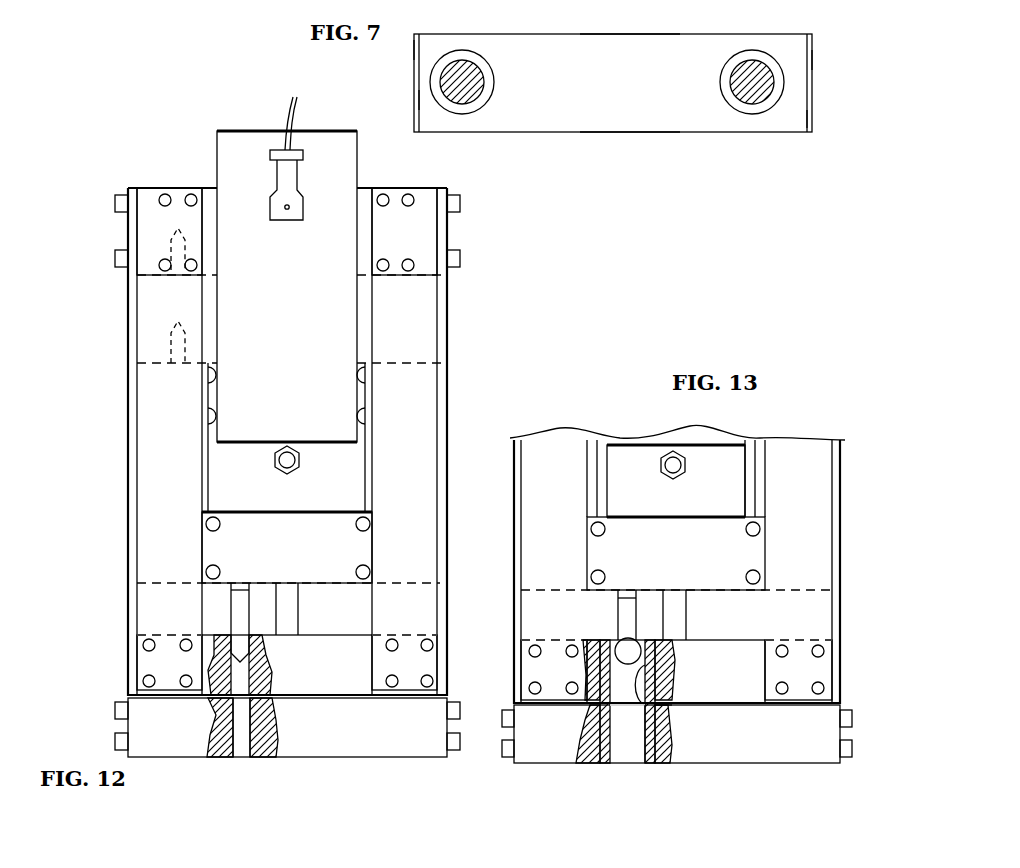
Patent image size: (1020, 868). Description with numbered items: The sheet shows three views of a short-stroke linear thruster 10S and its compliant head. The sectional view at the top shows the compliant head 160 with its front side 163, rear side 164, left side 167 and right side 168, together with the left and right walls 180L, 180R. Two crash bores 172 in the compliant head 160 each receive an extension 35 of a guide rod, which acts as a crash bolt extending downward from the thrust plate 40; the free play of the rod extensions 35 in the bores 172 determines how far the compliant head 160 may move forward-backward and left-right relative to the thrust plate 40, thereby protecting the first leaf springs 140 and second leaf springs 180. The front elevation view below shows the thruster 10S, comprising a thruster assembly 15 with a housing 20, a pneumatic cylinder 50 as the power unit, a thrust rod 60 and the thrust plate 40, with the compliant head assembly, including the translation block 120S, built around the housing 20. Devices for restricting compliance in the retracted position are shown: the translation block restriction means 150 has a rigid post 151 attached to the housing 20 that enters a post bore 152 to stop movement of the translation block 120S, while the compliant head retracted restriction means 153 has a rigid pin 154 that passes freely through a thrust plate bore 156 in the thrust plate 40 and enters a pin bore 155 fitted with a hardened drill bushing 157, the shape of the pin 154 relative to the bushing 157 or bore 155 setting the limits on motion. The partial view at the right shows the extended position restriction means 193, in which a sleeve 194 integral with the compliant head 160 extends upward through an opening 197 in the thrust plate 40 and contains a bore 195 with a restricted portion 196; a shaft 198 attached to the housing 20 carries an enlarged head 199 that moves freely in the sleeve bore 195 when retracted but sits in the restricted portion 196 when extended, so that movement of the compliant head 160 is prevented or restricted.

In FIG. 7, the compliant head 160 is at (786, 27).
In FIG. 12, the compliant head 160 is at (416, 740).
In FIG. 13, the compliant head 160 is at (790, 748).
In FIG. 7, the left side wall 180L is at (414, 46).
In FIG. 7, the right side wall 180R is at (812, 66).
In FIG. 7, the left side 167 is at (414, 101).
In FIG. 7, the right side 168 is at (812, 118).
In FIG. 7, the rear side 164 is at (632, 34).
In FIG. 7, the front side 163 is at (642, 132).
In FIG. 7, the crash bore 172 is at (494, 70).
In FIG. 7, the extension of guide rod 35 is at (474, 96).
In FIG. 12, the second leaf springs 180 is at (447, 412).
In FIG. 13, the second leaf springs 180 is at (677, 564).
In FIG. 12, the translation block 120S is at (447, 192).
In FIG. 12, the thruster 10S is at (500, 252).
In FIG. 13, the thruster 10S is at (618, 428).
In FIG. 12, the thruster assembly 15 is at (486, 310).
In FIG. 12, the pneumatic cylinder 50 is at (300, 334).
In FIG. 13, the pneumatic cylinder 50 is at (720, 460).
In FIG. 12, the housing 20 is at (312, 559).
In FIG. 13, the housing 20 is at (701, 566).
In FIG. 12, the thrust rod 60 is at (290, 606).
In FIG. 13, the thrust rod 60 is at (682, 612).
In FIG. 12, the thrust plate 40 is at (343, 664).
In FIG. 13, the thrust plate 40 is at (730, 697).
In FIG. 12, the first leaf springs 140 is at (158, 448).
In FIG. 13, the first leaf springs 140 is at (548, 530).
In FIG. 12, the translation block restriction means 150 is at (124, 322).
In FIG. 12, the rigid post 151 is at (171, 343).
In FIG. 12, the post bore 152 is at (171, 242).
In FIG. 12, the rigid pin 154 is at (240, 608).
In FIG. 12, the thrust plate bore 156 is at (240, 683).
In FIG. 12, the drill bushing 157 is at (220, 732).
In FIG. 12, the pin bore 155 is at (246, 735).
In FIG. 12, the compliant head retracted restriction means 153 is at (240, 763).
In FIG. 13, the extended position restriction means 193 is at (578, 764).
In FIG. 13, the sleeve 194 is at (652, 754).
In FIG. 13, the sleeve bore 195 is at (626, 744).
In FIG. 13, the restricted portion 196 is at (658, 712).
In FIG. 13, the opening 197 is at (644, 680).
In FIG. 13, the shaft 198 is at (622, 604).
In FIG. 13, the enlarged head 199 is at (622, 672).